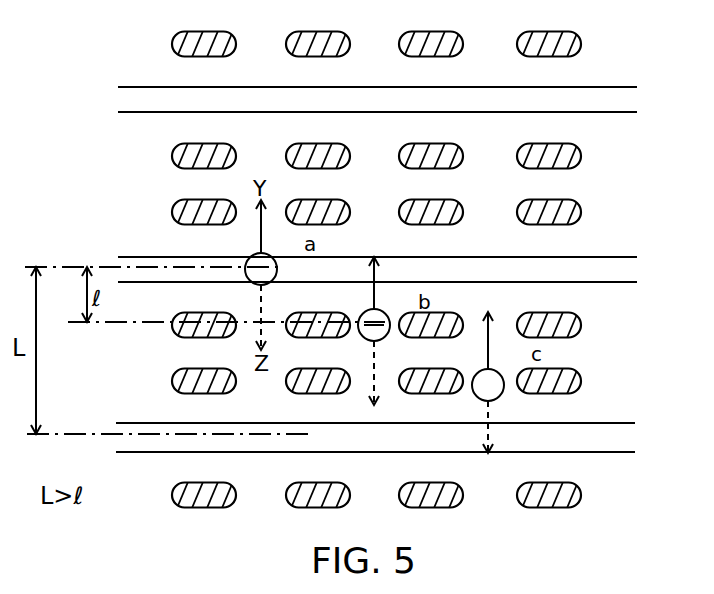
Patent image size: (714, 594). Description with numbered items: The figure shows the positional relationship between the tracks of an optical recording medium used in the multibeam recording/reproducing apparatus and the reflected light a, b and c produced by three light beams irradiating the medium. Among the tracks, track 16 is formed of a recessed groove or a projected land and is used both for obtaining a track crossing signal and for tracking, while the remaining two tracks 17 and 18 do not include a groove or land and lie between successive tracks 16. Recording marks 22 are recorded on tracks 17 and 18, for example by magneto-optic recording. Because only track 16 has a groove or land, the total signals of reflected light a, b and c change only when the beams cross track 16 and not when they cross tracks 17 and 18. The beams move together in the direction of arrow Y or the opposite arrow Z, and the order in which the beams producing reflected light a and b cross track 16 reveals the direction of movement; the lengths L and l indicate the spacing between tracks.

The track 16 is at (628, 272).
The track 17 is at (627, 327).
The track 18 is at (620, 384).
The recording mark 22 is at (582, 45).